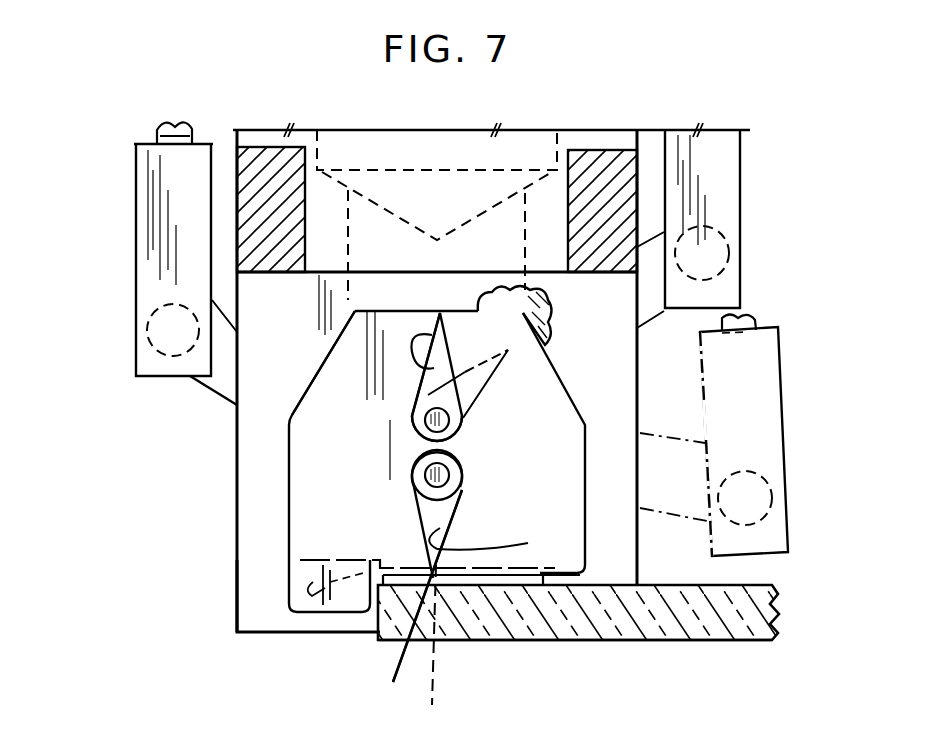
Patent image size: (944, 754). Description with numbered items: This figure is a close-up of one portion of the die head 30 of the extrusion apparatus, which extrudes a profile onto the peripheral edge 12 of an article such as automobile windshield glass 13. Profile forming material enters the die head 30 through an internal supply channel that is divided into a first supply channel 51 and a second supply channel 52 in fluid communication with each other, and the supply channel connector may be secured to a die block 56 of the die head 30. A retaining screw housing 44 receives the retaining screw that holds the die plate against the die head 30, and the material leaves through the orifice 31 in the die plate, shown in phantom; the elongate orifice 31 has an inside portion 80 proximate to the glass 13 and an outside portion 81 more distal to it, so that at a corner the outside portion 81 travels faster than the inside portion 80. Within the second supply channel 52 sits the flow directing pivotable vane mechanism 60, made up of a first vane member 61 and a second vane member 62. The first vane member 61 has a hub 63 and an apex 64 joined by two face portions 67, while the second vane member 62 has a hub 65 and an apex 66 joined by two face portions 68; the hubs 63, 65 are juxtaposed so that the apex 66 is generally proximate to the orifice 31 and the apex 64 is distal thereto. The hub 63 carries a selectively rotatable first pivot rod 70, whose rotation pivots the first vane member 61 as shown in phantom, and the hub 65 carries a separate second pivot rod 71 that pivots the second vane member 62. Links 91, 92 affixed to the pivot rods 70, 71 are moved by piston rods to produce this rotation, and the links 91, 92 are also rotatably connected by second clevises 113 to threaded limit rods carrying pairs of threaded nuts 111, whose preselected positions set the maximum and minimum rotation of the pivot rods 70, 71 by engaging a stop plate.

The peripheral edge 12 is at (467, 587).
The automobile windshield glass 13 is at (717, 644).
The die head 30 is at (234, 521).
The orifice 31 is at (428, 651).
The retaining screw housing 44 is at (608, 157).
The first supply channel 51 is at (430, 133).
The second supply channel 52 is at (323, 403).
The die block 56 is at (255, 593).
The vane mechanism 60 is at (380, 443).
The first vane member 61 is at (421, 379).
The second vane member 62 is at (458, 507).
The hub 63 is at (455, 440).
The apex 64 is at (440, 313).
The hub 65 is at (460, 474).
The apex 66 is at (414, 601).
The face portions 67 is at (450, 346).
The face portions 68 is at (440, 530).
The first pivot rod 70 is at (447, 412).
The second pivot rod 71 is at (437, 477).
The inside portion 80 is at (516, 592).
The outside portion 81 is at (312, 609).
The link 91 is at (646, 318).
The link 92 is at (217, 388).
The threaded nuts 111 is at (157, 128).
The second clevises 113 is at (143, 222).